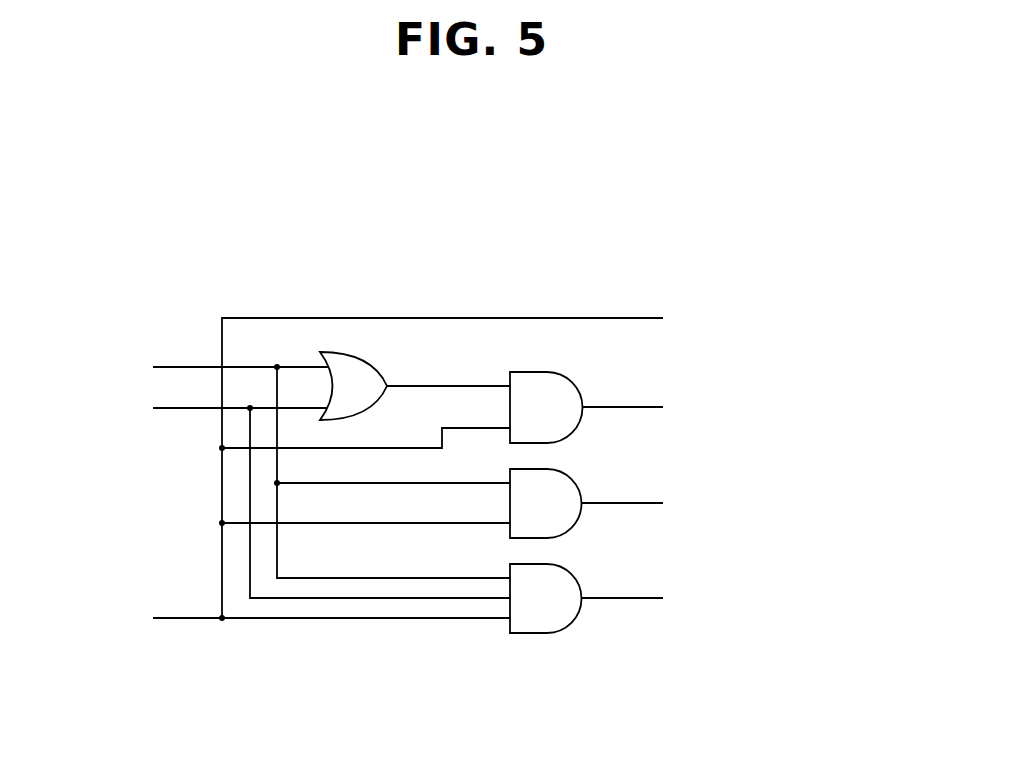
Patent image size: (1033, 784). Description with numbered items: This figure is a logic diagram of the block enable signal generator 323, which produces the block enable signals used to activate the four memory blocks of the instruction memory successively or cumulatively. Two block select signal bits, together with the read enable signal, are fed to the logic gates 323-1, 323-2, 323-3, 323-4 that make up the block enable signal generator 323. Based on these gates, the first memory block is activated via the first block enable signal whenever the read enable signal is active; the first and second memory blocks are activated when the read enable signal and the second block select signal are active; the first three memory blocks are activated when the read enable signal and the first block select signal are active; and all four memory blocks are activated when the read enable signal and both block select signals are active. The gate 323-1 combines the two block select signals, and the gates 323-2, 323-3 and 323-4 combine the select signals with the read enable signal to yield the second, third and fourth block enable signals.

The block enable signal generator 323 is at (780, 244).
The logic gate 323-1 is at (367, 358).
The logic gate 323-2 is at (567, 380).
The logic gate 323-3 is at (567, 476).
The logic gate 323-4 is at (567, 571).